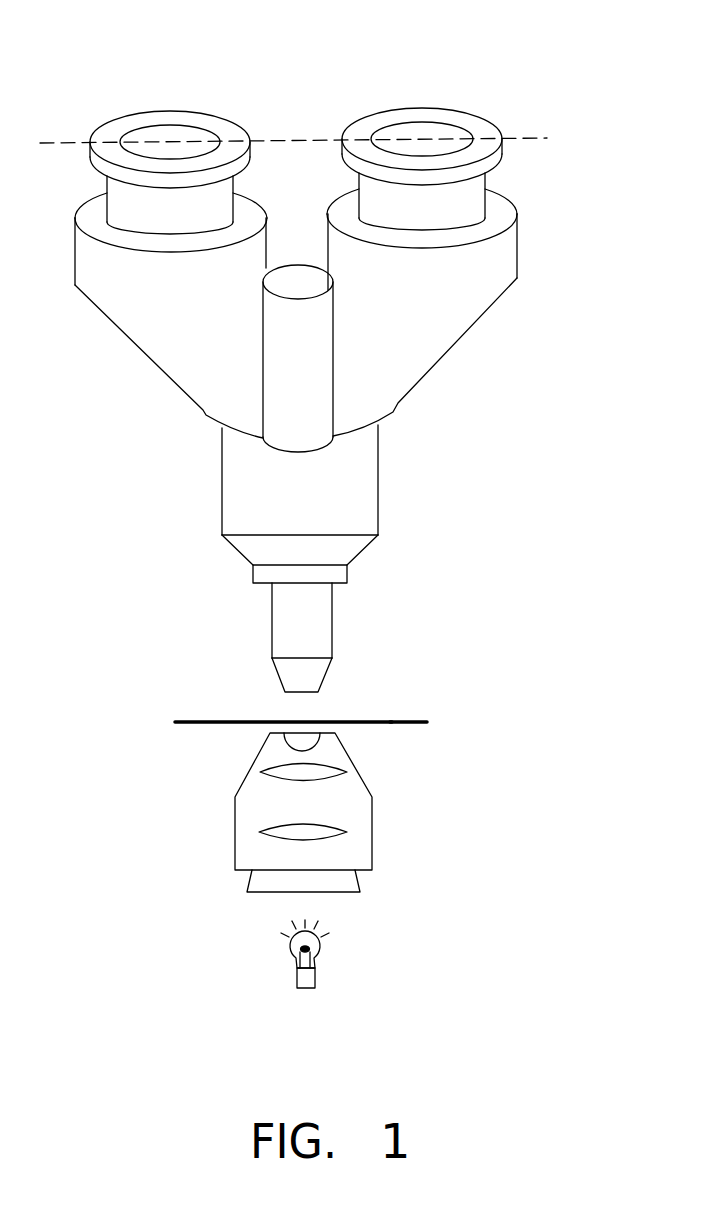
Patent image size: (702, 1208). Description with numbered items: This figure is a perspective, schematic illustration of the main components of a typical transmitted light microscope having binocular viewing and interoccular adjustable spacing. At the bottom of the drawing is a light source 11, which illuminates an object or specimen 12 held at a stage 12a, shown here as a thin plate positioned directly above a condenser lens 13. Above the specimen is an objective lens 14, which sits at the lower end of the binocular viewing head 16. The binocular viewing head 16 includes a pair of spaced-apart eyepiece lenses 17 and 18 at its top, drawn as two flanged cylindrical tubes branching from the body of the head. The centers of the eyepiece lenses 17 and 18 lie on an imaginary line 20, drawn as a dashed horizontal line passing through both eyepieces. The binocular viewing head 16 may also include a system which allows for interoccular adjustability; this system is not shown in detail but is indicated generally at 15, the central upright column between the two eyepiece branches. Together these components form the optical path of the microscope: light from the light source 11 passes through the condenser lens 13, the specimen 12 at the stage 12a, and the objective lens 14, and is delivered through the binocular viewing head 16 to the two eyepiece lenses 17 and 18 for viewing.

The light source 11 is at (335, 941).
The object (specimen) 12 is at (270, 720).
The stage 12a is at (400, 722).
The condenser lens 13 is at (365, 831).
The objective lens 14 is at (332, 628).
The interoccular adjustability system 15 is at (298, 346).
The binocular viewing head 16 is at (378, 469).
The eyepiece lens 17 is at (170, 110).
The eyepiece lens 18 is at (422, 107).
The imaginary line 20 is at (296, 140).